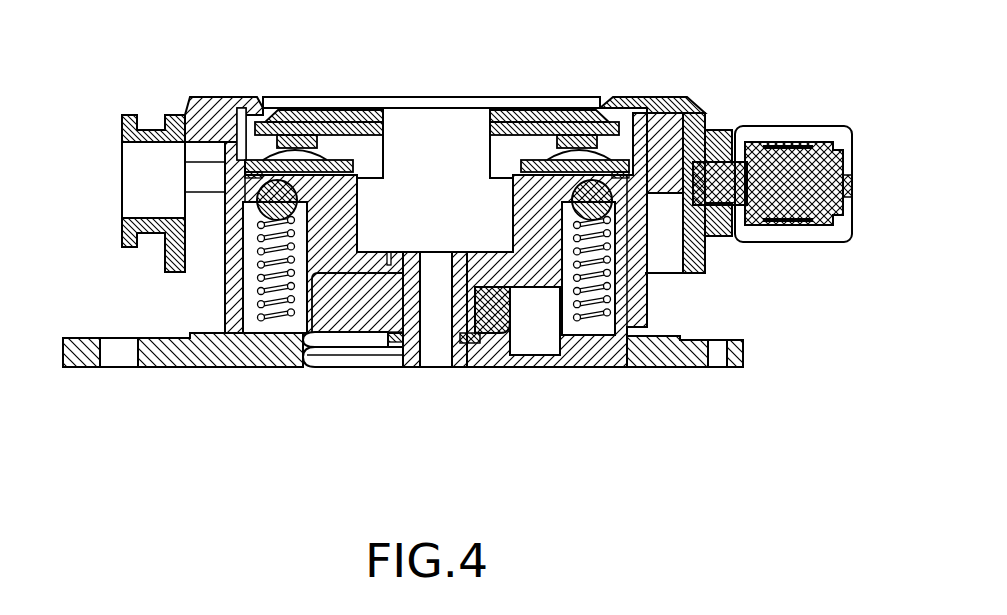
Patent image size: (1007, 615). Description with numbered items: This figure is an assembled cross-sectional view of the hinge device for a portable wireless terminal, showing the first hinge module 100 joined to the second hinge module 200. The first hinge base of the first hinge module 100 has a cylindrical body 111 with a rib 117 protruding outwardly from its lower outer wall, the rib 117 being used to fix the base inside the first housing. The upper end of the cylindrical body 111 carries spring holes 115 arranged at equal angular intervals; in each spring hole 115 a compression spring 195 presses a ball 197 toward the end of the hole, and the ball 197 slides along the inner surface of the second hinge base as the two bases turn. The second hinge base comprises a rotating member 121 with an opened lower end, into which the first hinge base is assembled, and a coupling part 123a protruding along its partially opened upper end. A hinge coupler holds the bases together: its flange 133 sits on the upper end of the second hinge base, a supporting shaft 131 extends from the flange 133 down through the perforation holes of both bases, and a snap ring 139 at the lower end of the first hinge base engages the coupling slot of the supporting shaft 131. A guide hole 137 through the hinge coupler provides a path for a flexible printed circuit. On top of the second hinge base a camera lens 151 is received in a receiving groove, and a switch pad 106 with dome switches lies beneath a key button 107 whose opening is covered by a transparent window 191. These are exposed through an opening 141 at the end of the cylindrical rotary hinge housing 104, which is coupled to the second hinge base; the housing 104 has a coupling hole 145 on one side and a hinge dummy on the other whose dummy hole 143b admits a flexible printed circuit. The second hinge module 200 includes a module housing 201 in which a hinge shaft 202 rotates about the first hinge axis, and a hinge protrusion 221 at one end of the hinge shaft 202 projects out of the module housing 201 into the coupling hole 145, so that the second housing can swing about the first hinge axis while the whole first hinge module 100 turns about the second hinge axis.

The first hinge module 100 is at (140, 387).
The rotary hinge housing 104 is at (655, 108).
The switch pad 106 is at (257, 157).
The key button 107 is at (314, 140).
The cylindrical body 111 is at (635, 368).
The spring hole 115 is at (228, 293).
The rib 117 is at (200, 367).
The rotating member 121 is at (233, 253).
The coupling part 123a is at (707, 262).
The supporting shaft 131 is at (467, 368).
The flange 133 is at (490, 332).
The guide hole 137 is at (435, 362).
The snap ring 139 is at (398, 340).
The opening 141 is at (600, 108).
The dummy hole 143b is at (137, 165).
The coupling hole 145 is at (690, 115).
The camera lens 151 is at (407, 152).
The transparent window 191 is at (460, 108).
The compression spring 195 is at (585, 342).
The ball 197 is at (253, 197).
The second hinge module 200 is at (791, 79).
The module housing 201 is at (795, 243).
The hinge shaft 202 is at (800, 140).
The hinge protrusion 221 is at (736, 132).